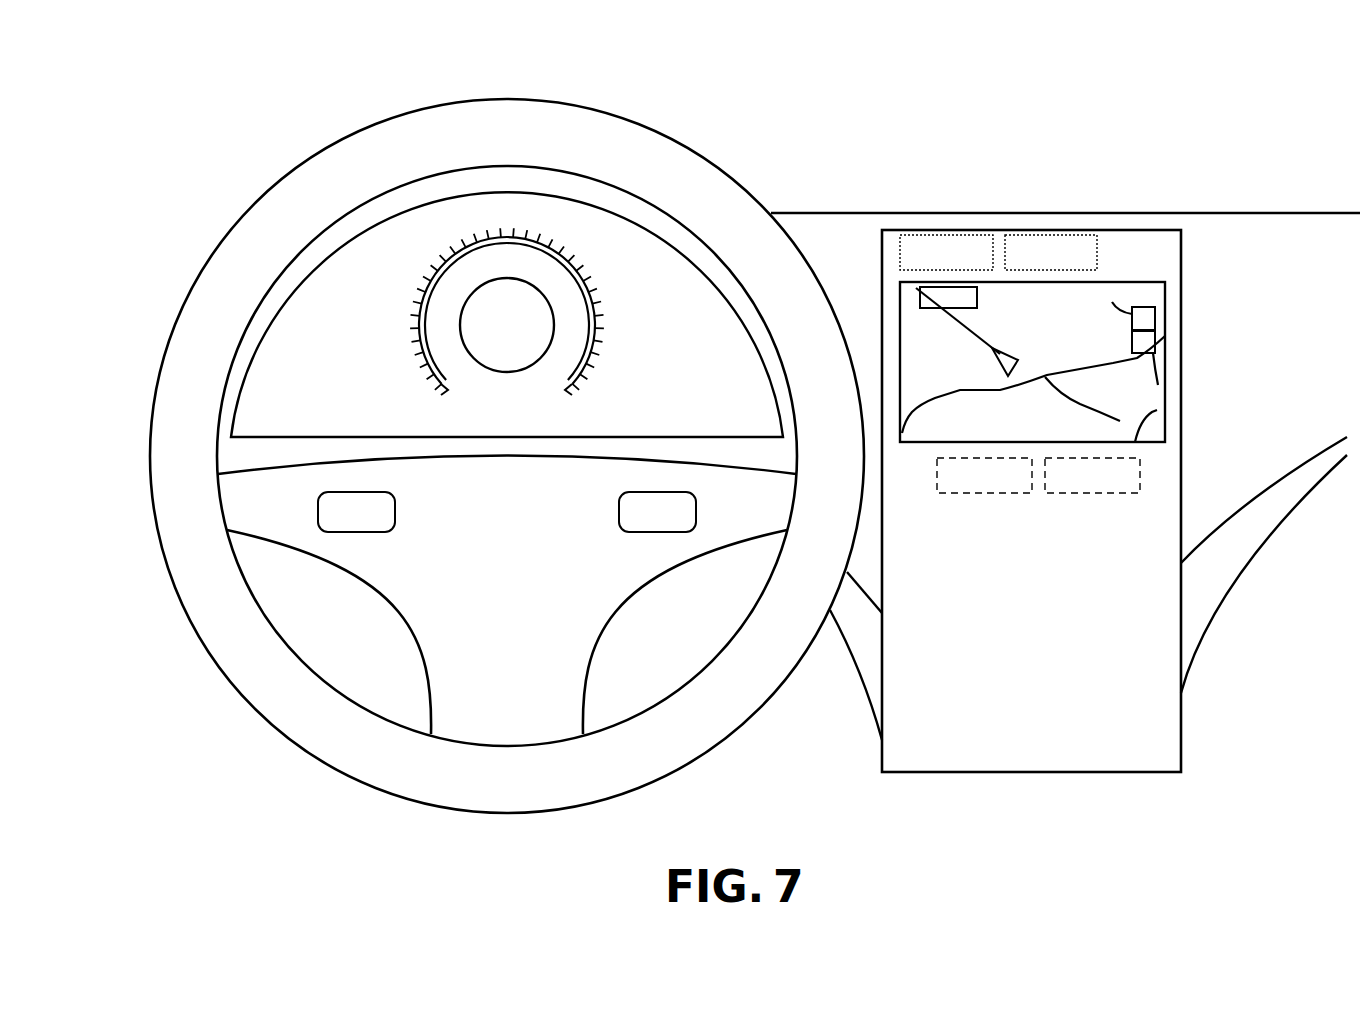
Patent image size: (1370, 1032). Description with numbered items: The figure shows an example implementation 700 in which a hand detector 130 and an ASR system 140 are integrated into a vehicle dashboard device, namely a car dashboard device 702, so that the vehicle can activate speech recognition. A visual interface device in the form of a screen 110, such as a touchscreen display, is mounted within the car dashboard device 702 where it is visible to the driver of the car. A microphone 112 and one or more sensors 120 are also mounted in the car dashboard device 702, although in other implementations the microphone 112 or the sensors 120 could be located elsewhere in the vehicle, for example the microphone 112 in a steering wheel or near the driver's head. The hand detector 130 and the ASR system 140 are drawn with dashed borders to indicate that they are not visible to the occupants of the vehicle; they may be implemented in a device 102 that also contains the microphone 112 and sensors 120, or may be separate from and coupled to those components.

The implementation 700 is at (1174, 104).
The car dashboard device 702 is at (1202, 212).
The device 102 is at (1105, 501).
The screen 110 is at (1157, 345).
The microphone 112 is at (946, 252).
The sensors 120 is at (1051, 252).
The hand detector 130 is at (984, 475).
The ASR system 140 is at (1092, 475).